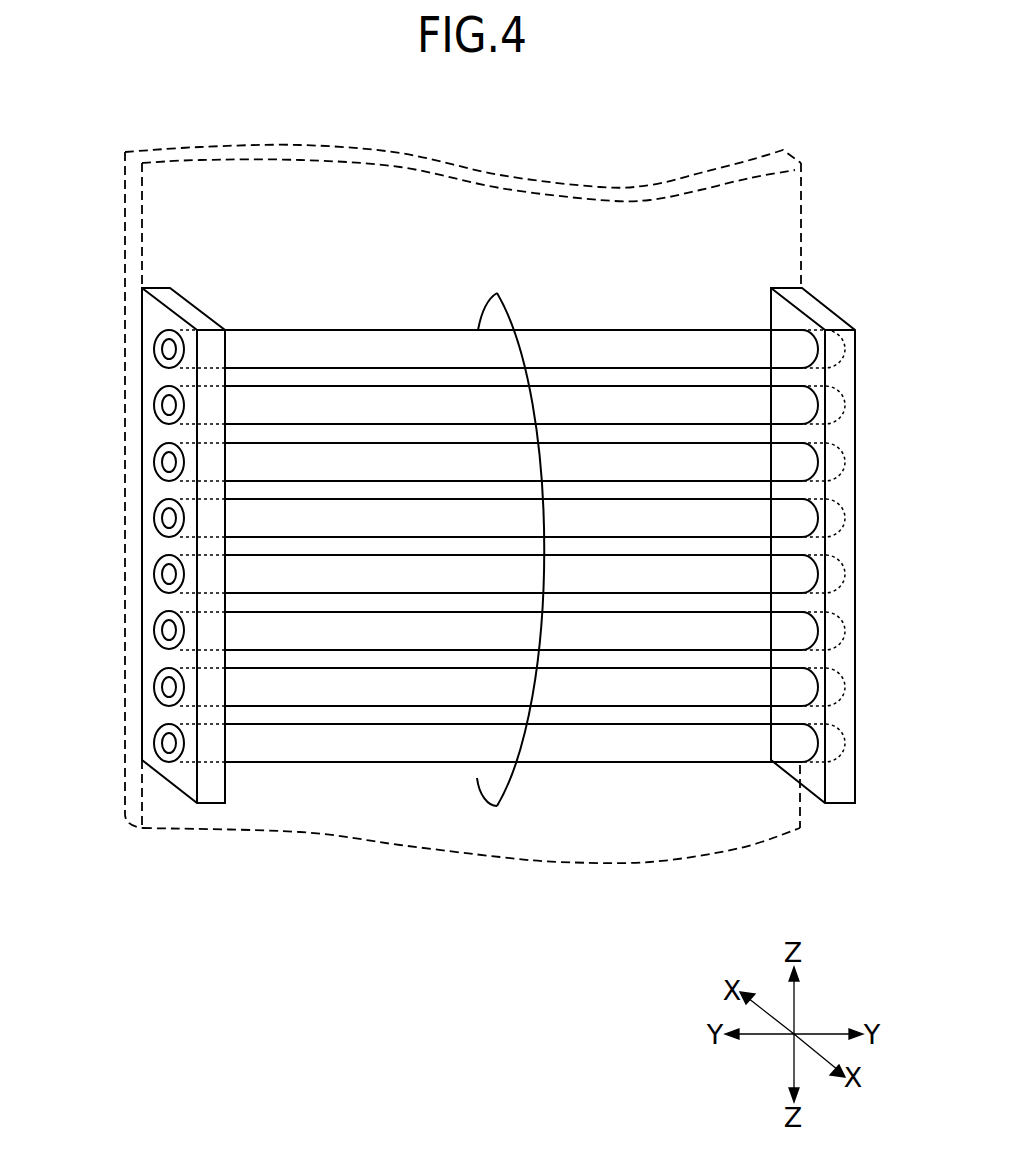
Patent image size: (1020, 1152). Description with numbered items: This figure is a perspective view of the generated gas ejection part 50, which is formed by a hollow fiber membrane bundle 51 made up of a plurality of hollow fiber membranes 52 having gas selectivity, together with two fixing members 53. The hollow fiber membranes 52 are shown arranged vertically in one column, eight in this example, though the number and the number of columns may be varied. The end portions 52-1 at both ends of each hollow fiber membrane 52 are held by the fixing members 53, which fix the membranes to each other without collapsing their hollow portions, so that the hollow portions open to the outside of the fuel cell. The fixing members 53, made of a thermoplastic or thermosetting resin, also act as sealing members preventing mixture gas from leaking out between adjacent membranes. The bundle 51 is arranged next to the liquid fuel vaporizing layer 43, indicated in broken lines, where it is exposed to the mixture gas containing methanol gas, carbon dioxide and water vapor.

The liquid fuel vaporizing layer 43 is at (803, 207).
The generated gas ejection part 50 is at (234, 236).
The hollow fiber membrane bundle 51 is at (497, 290).
The hollow fiber membrane 52 is at (431, 547).
The end portion 52-1 is at (157, 342).
The fixing member 53 is at (845, 376).